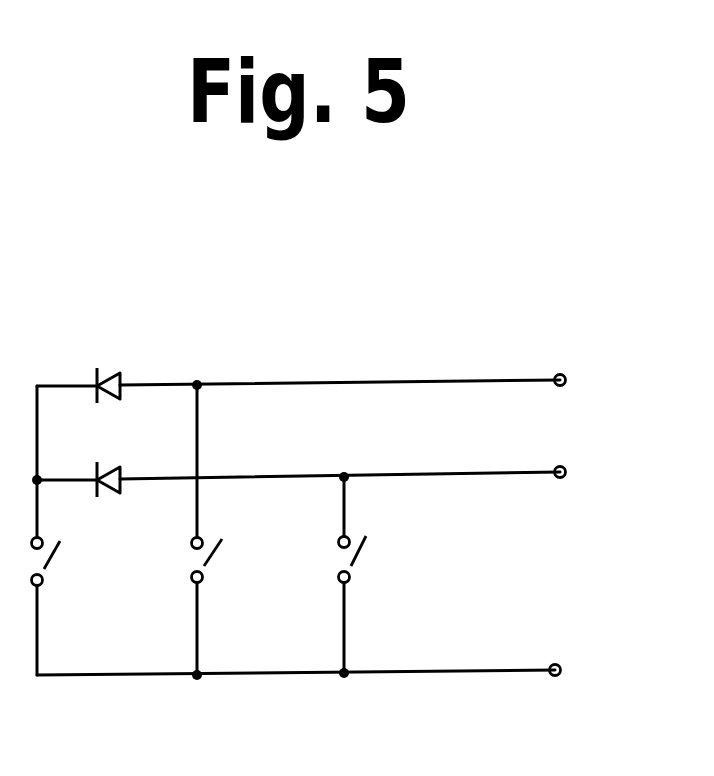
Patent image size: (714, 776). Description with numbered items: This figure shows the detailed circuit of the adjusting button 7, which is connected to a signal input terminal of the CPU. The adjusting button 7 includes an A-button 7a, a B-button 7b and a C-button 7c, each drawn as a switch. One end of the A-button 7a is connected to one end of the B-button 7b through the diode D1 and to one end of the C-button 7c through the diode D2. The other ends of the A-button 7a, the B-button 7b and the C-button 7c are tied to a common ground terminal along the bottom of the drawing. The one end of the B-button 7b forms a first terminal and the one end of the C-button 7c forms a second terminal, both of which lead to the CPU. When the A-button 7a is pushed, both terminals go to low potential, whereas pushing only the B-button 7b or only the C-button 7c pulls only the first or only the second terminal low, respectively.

The adjusting button 7 is at (297, 378).
The A-button 7a is at (50, 560).
The B-button 7b is at (211, 558).
The C-button 7c is at (360, 556).
The diode D1 is at (117, 377).
The diode D2 is at (118, 473).